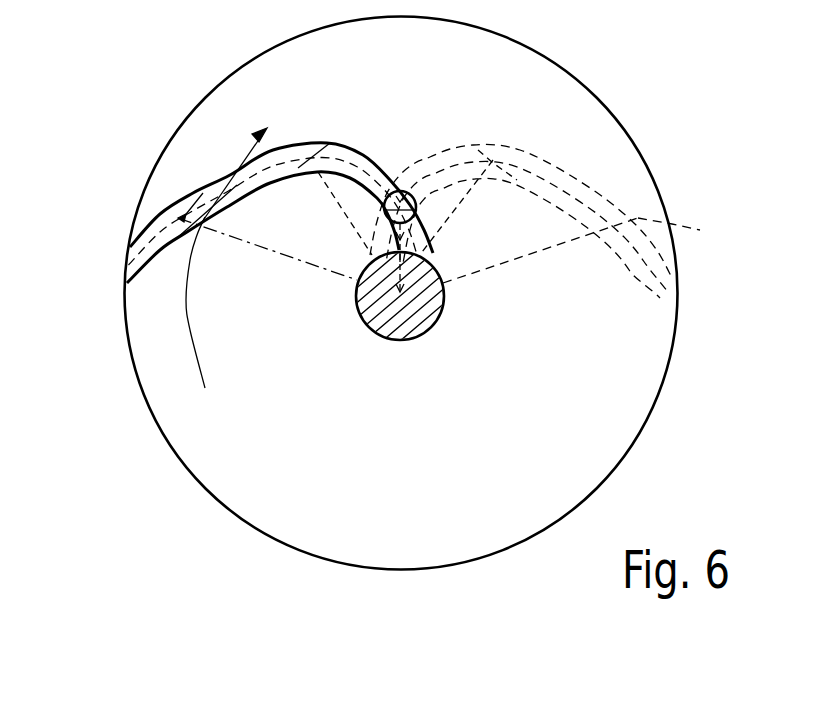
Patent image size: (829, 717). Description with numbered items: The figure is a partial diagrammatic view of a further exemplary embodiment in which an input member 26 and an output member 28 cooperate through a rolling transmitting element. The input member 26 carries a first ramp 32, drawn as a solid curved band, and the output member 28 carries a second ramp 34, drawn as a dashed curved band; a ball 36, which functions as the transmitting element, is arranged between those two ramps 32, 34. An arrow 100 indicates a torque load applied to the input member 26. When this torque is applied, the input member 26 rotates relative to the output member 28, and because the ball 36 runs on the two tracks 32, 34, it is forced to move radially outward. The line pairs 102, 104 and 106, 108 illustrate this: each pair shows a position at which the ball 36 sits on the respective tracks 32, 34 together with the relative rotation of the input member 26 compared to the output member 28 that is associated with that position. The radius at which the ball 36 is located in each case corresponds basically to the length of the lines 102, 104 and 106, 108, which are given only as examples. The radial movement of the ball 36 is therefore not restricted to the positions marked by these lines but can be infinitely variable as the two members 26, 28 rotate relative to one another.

The input member 26 is at (148, 226).
The output member 28 is at (700, 230).
The first ramp 32 is at (303, 158).
The second ramp 34 is at (522, 157).
The ball 36 is at (400, 190).
The arrow 100 is at (195, 343).
The line 102 is at (337, 204).
The line 104 is at (453, 208).
The line 106 is at (283, 258).
The line 108 is at (500, 263).